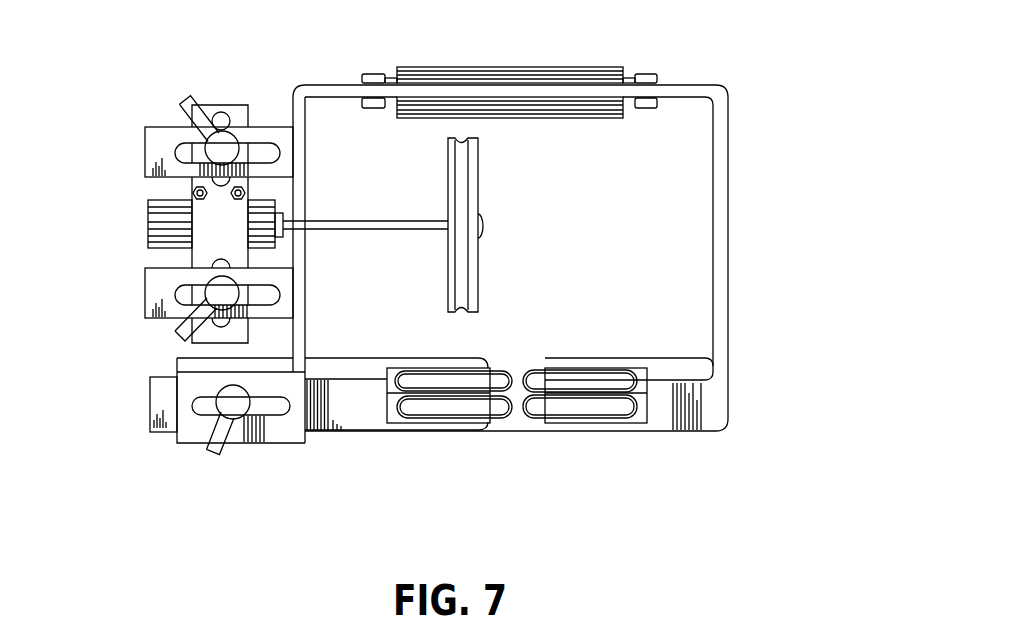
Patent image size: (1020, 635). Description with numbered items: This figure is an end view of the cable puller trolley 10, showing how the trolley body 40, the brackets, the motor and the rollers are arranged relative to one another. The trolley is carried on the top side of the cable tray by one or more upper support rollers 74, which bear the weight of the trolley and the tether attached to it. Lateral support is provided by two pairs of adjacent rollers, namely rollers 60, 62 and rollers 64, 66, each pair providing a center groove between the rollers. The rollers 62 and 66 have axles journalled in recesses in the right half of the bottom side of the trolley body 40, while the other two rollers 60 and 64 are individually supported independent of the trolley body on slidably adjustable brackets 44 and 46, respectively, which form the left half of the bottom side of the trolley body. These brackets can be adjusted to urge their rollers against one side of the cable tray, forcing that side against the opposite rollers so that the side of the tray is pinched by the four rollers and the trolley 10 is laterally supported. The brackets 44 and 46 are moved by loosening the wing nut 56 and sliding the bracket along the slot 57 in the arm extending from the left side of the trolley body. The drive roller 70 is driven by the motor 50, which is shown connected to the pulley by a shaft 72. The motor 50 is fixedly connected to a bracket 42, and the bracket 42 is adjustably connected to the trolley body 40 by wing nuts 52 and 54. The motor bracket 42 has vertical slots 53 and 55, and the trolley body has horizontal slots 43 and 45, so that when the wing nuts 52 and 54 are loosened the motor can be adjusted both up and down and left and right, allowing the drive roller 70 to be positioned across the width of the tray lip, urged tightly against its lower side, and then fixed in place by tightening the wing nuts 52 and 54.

The trolley 10 is at (436, 282).
The trolley body 40 is at (155, 150).
The bracket 42 is at (212, 212).
The horizontal slot 43 is at (258, 146).
The slidably adjustable bracket 44 is at (162, 396).
The horizontal slot 45 is at (177, 296).
The slidably adjustable bracket 46 is at (190, 363).
The motor 50 is at (165, 223).
The wing nut 52 is at (180, 112).
The vertical slot 53 is at (218, 112).
The wing nut 54 is at (190, 340).
The vertical slot 55 is at (190, 265).
The wing nut 56 is at (212, 452).
The slot 57 is at (272, 433).
The roller 60 is at (427, 405).
The roller 62 is at (540, 407).
The roller 64 is at (506, 376).
The roller 66 is at (563, 382).
The drive roller 70 is at (478, 178).
The shaft 72 is at (404, 221).
The upper support roller 74 is at (563, 78).